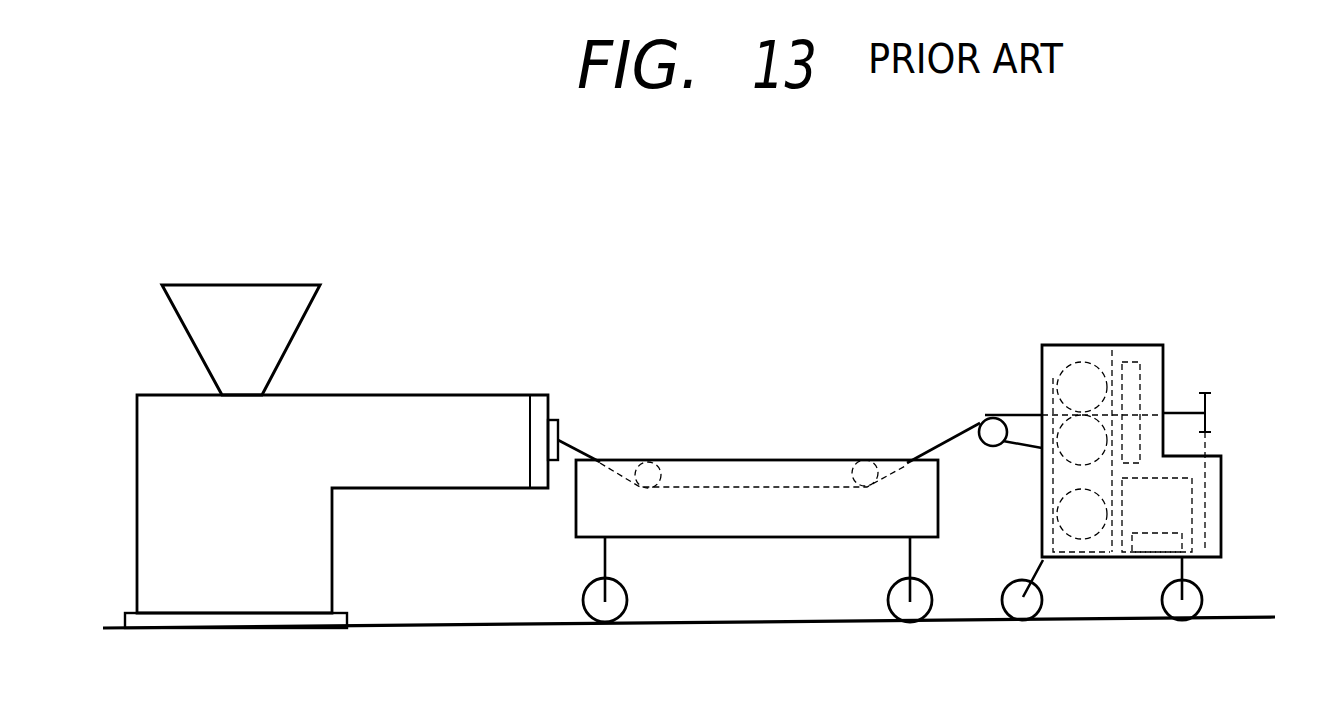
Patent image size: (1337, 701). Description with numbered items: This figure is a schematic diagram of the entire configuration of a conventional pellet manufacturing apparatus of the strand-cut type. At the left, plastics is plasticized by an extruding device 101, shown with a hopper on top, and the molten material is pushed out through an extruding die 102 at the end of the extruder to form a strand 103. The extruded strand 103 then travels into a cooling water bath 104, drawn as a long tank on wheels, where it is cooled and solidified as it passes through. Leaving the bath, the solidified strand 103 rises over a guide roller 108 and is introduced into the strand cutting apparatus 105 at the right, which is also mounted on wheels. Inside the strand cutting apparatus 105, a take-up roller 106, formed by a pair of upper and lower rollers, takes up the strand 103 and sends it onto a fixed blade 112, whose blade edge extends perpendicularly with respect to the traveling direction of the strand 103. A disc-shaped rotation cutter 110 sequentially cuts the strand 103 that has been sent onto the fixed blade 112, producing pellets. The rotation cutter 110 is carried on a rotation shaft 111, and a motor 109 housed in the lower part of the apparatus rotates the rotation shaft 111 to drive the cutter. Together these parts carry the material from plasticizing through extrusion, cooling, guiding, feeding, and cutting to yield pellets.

The extruding device 101 is at (422, 420).
The extruding die 102 is at (559, 425).
The strand 103 is at (920, 458).
The cooling water bath 104 is at (753, 463).
The strand cutting apparatus 105 is at (1145, 345).
The take-up roller 106 is at (1080, 364).
The guide roller 108 is at (988, 416).
The motor 109 is at (1175, 505).
The rotation cutter 110 is at (1163, 376).
The rotation shaft 111 is at (1180, 413).
The fixed blade 112 is at (1116, 347).